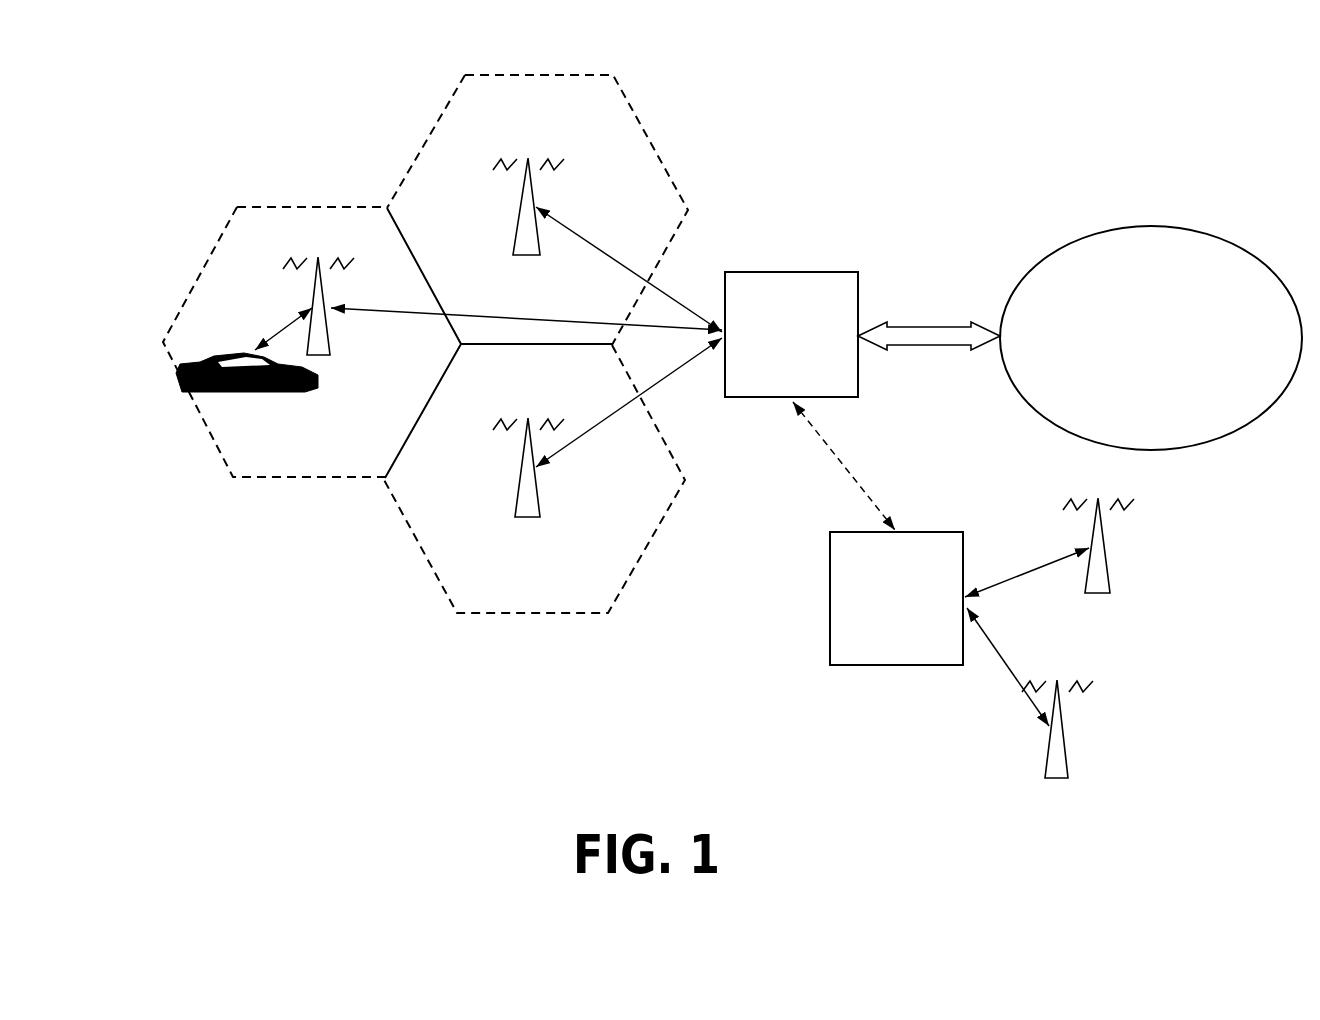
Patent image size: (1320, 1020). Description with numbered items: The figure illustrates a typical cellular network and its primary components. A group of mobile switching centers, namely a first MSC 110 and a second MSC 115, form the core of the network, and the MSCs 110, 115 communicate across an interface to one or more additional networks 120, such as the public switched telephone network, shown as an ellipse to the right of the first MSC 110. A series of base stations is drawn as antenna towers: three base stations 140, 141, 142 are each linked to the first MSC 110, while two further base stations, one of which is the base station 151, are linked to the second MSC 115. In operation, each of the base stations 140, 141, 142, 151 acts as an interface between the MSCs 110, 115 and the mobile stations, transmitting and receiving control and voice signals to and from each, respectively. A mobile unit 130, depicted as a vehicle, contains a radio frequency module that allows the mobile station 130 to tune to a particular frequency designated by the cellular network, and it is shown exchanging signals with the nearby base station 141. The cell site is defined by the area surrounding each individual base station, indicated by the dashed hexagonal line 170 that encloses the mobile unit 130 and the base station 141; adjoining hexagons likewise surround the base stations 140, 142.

The mobile switching center 110 is at (791, 334).
The mobile switching center 115 is at (896, 598).
The additional network 120 is at (1151, 338).
The mobile unit 130 is at (195, 358).
The base station 140 is at (530, 188).
The base station 141 is at (317, 340).
The base station 142 is at (528, 487).
The base station 151 is at (1060, 748).
The cell site line 170 is at (257, 478).